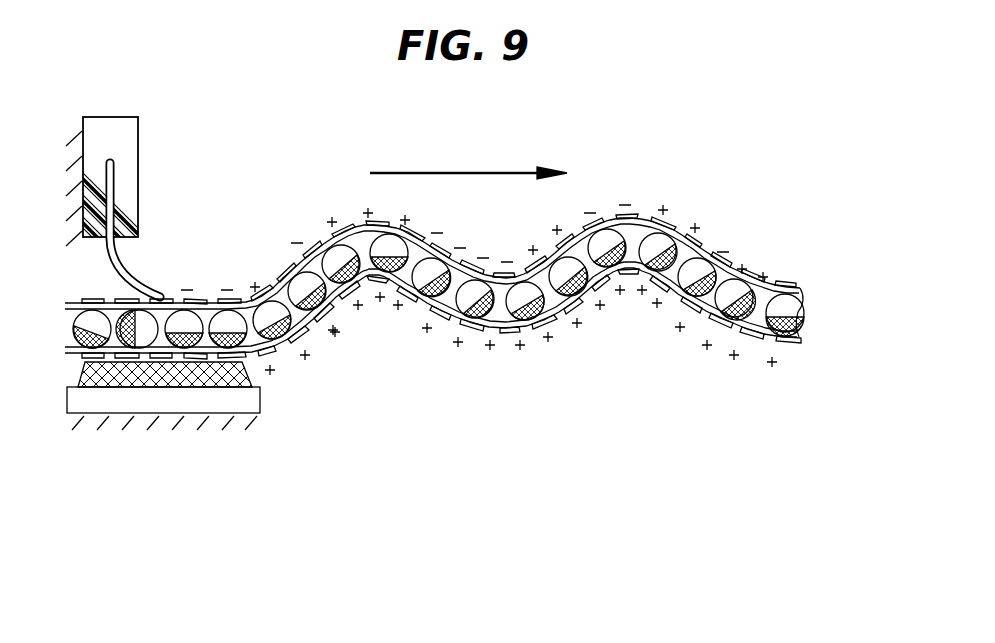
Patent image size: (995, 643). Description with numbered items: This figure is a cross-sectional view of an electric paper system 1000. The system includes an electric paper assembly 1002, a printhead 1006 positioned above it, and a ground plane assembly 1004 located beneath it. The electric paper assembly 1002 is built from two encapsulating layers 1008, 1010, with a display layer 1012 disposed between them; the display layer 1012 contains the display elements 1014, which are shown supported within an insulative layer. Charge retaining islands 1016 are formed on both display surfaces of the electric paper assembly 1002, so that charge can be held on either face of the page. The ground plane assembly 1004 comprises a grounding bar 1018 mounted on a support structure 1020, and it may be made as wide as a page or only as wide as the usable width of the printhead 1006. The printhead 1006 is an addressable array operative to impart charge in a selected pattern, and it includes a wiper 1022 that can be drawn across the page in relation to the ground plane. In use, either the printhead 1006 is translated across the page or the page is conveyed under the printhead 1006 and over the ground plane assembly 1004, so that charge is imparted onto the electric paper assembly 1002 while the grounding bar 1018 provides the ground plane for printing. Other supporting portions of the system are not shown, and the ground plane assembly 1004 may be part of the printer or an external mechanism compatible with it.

The electric paper system 1000 is at (467, 240).
The electric paper assembly 1002 is at (467, 296).
The ground plane assembly 1004 is at (204, 427).
The printhead 1006 is at (148, 252).
The encapsulating layer 1008 is at (804, 287).
The encapsulating layer 1010 is at (808, 338).
The display layer 1012 is at (840, 323).
The display elements 1014 is at (692, 262).
The charge retaining islands 1016 is at (585, 224).
The grounding bar 1018 is at (233, 378).
The support structure 1020 is at (252, 399).
The wiper 1022 is at (127, 275).